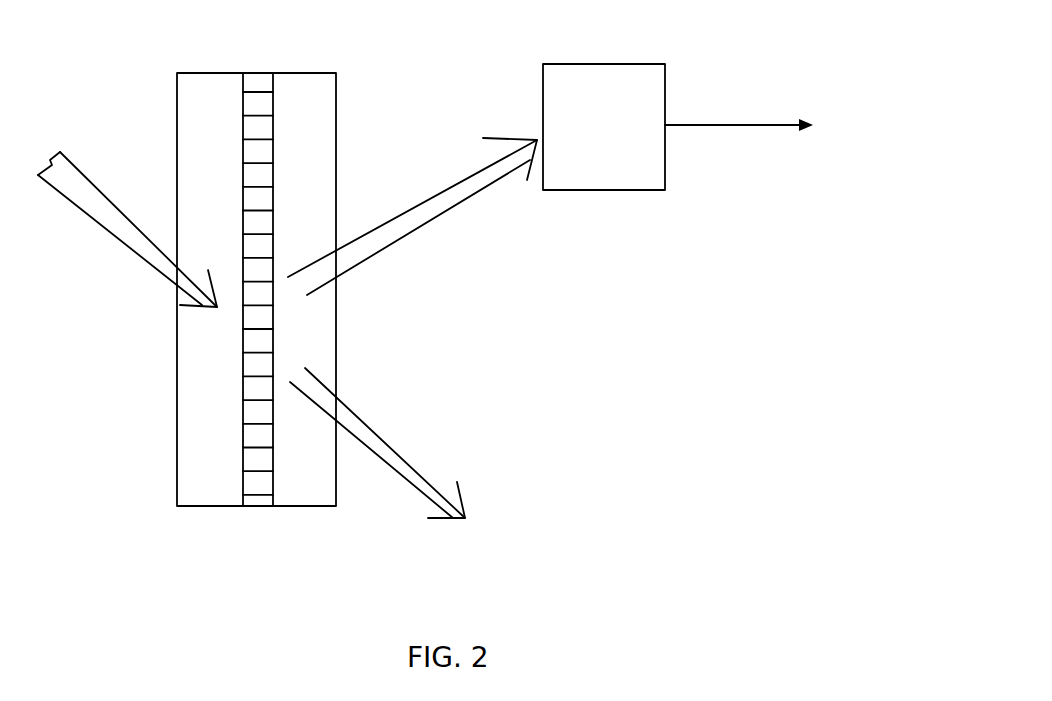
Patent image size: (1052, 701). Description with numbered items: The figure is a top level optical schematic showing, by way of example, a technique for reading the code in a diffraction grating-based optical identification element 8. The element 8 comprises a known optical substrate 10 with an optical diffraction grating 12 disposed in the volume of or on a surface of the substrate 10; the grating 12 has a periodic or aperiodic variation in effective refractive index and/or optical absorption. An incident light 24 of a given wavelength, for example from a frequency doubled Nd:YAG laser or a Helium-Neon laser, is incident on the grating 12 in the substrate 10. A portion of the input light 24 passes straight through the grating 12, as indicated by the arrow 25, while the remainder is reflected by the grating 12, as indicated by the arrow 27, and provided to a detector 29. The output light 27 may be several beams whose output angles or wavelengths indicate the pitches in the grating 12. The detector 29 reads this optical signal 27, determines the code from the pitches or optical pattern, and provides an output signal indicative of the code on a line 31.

The optical identification element 8 is at (167, 57).
The optical substrate 10 is at (178, 506).
The optical diffraction grating 12 is at (246, 474).
The incident light 24 is at (91, 205).
The arrow indicating transmitted light 25 is at (423, 483).
The output light 27 is at (435, 205).
The detector 29 is at (602, 80).
The line 31 is at (718, 125).